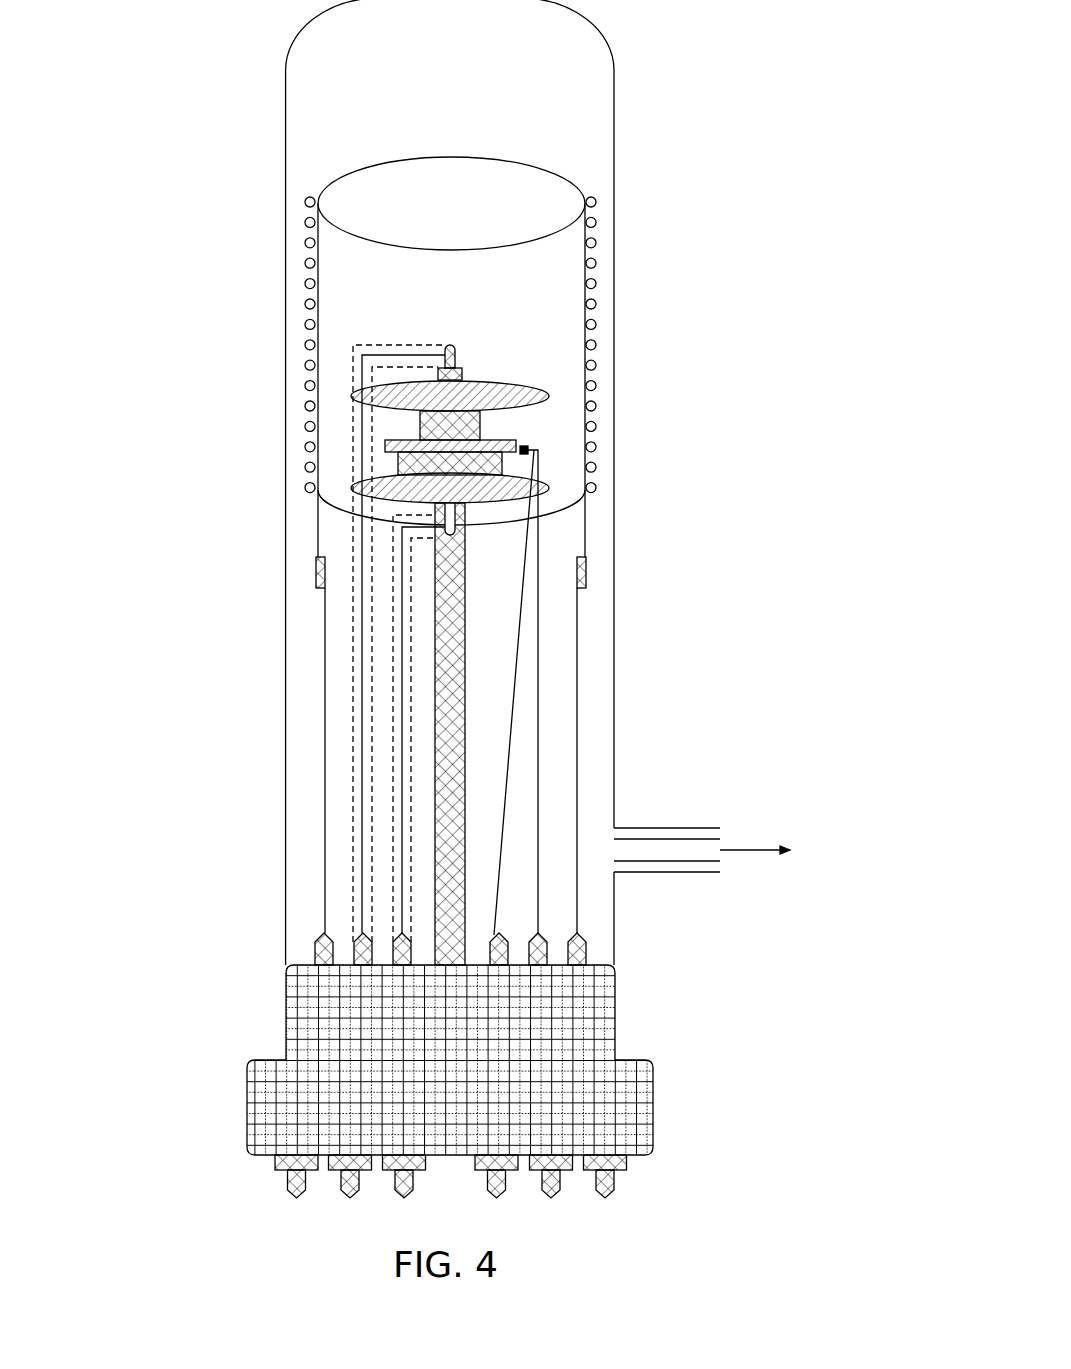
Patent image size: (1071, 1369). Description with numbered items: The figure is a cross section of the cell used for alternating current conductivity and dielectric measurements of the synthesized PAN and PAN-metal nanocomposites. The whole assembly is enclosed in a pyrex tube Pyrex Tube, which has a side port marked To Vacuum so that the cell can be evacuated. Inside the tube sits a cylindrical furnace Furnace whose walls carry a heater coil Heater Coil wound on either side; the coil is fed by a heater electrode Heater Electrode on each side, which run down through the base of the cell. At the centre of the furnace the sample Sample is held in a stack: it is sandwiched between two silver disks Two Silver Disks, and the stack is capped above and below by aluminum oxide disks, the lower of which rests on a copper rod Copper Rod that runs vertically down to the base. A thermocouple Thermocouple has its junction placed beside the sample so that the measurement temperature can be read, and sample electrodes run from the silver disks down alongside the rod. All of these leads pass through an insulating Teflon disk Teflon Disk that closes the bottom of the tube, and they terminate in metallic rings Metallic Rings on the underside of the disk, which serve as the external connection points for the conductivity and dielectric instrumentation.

The furnace Furnace is at (550, 203).
The heater coil Heater Coil is at (306, 305).
The silver disks Two Silver Disks is at (420, 427).
The sample Sample is at (528, 446).
The copper rod Copper Rod is at (465, 636).
The thermocouple Thermocouple is at (512, 745).
The pyrex tube Pyrex Tube is at (614, 784).
The vacuum connection To Vacuum is at (822, 850).
The heater electrode Heater Electrode is at (325, 918).
The Teflon disk Teflon Disk is at (653, 1110).
The metallic rings Metallic Rings is at (562, 1190).